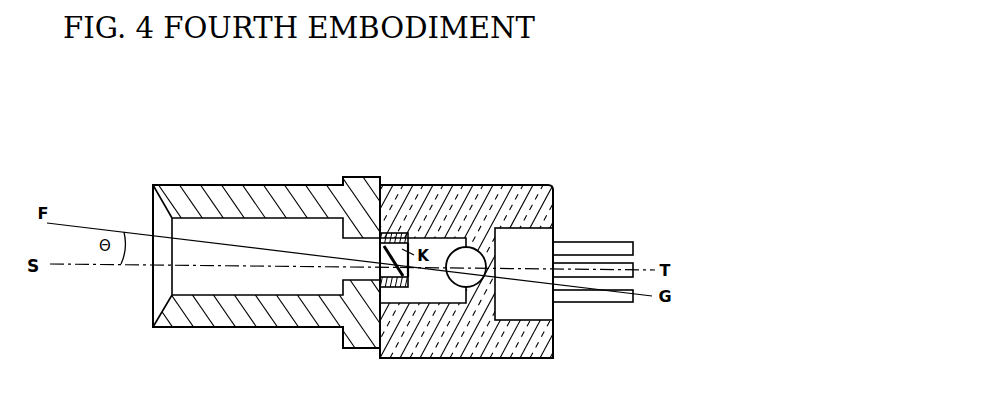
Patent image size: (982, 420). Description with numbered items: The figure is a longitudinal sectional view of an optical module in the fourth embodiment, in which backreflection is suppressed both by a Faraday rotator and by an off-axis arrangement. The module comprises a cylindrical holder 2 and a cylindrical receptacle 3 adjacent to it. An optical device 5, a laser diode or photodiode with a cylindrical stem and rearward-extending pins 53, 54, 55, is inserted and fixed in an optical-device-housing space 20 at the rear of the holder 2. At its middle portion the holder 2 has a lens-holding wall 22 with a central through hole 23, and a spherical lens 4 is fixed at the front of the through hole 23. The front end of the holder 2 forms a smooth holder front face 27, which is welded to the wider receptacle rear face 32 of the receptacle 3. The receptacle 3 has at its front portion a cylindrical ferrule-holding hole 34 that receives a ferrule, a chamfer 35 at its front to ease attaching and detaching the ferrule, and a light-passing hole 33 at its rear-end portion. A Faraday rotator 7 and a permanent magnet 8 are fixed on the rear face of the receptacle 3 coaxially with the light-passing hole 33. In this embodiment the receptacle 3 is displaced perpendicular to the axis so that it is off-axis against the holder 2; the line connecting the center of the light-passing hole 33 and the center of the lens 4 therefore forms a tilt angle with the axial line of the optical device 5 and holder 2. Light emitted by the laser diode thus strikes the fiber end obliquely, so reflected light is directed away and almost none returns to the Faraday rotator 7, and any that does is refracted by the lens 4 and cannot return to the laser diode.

The holder 2 is at (531, 196).
The receptacle 3 is at (262, 190).
The spherical lens 4 is at (462, 247).
The optical device 5 is at (540, 301).
The Faraday rotator 7 is at (403, 250).
The permanent magnet 8 is at (386, 233).
The optical-device-housing space 20 is at (534, 224).
The lens-holding wall 22 is at (477, 290).
The through hole 23 is at (509, 280).
The holder front face 27 is at (398, 303).
The receptacle rear face 32 is at (366, 318).
The light-passing hole 33 is at (340, 324).
The ferrule-holding hole 34 is at (207, 285).
The chamfer 35 is at (161, 316).
The pin 53 is at (583, 247).
The pin 54 is at (634, 270).
The pin 55 is at (598, 297).